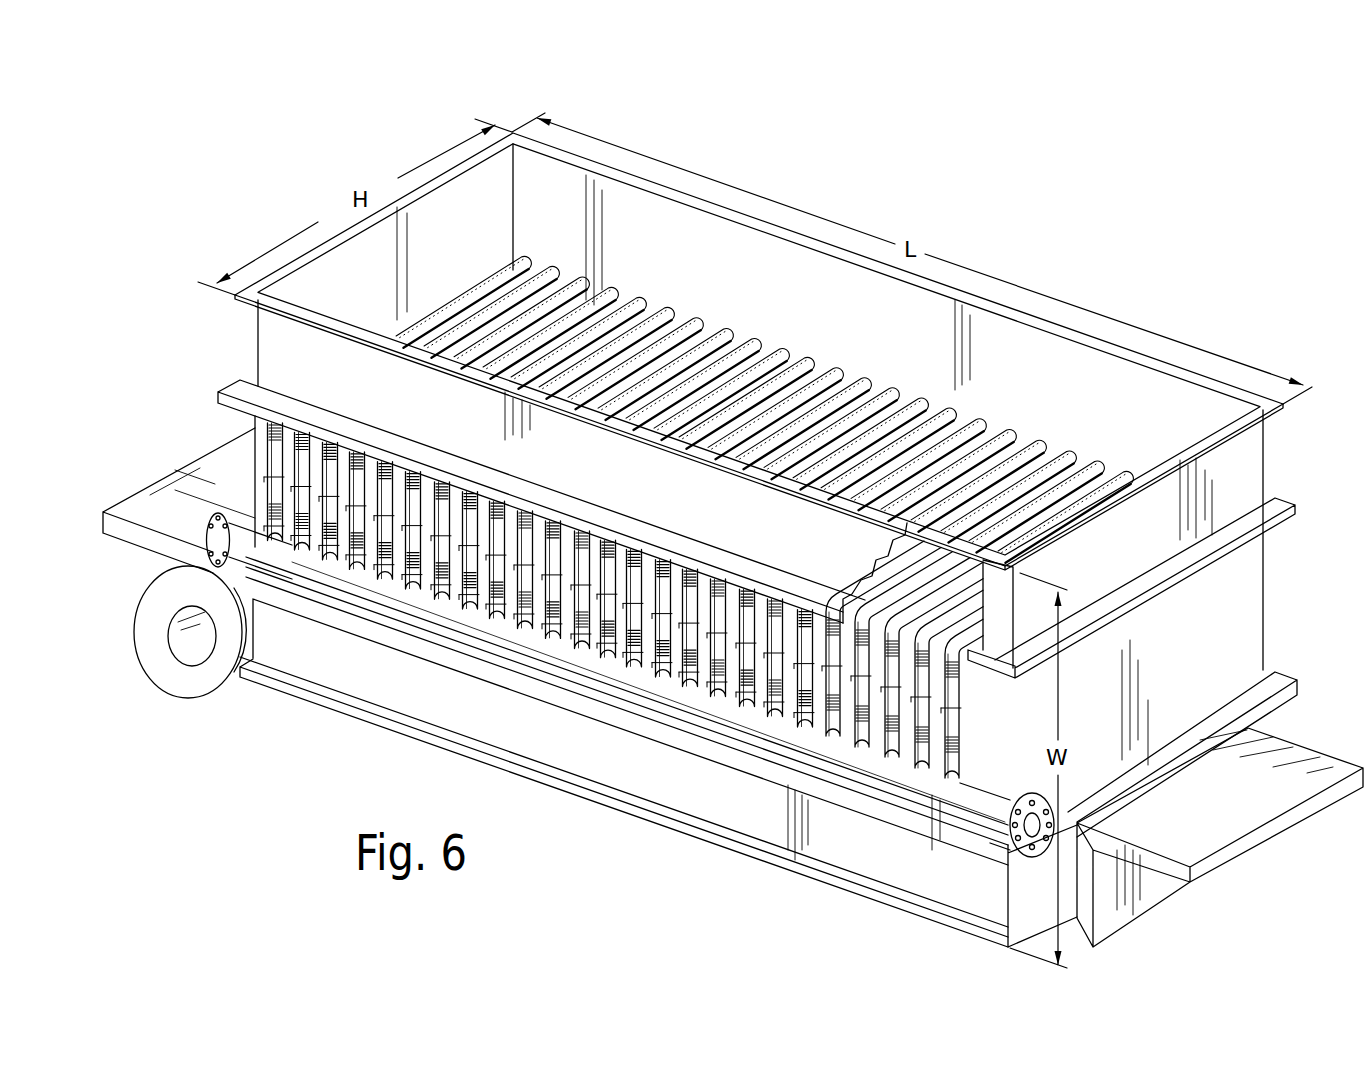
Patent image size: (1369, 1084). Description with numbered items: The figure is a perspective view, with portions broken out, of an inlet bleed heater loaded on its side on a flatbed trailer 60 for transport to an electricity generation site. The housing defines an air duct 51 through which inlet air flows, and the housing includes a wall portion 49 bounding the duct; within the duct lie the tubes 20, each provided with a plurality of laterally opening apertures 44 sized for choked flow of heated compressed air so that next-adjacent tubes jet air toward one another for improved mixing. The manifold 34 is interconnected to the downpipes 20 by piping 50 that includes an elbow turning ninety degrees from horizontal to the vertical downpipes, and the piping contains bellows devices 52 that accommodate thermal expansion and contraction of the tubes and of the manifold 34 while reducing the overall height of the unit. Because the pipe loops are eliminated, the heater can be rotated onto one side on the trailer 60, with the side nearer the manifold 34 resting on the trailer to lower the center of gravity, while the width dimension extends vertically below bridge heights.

The tubes 20 is at (690, 330).
The manifold 34 is at (945, 800).
The apertures 44 is at (880, 410).
The front wall 49 is at (260, 348).
The piping 50 is at (860, 703).
The air duct 51 is at (838, 325).
The devices 52 is at (763, 693).
The flatbed trailer 60 is at (205, 686).